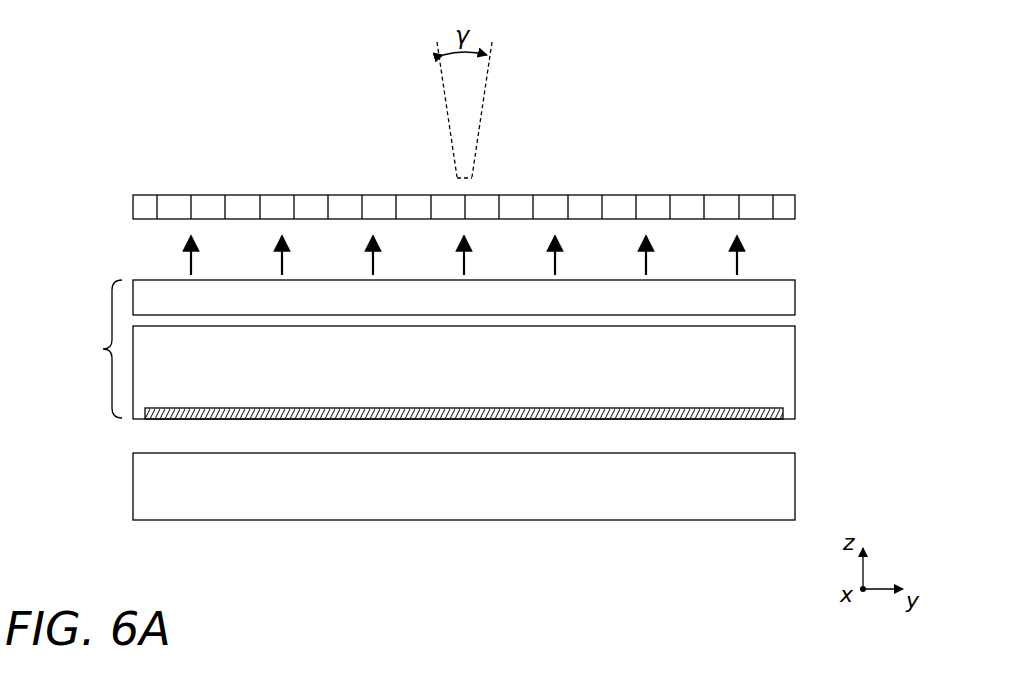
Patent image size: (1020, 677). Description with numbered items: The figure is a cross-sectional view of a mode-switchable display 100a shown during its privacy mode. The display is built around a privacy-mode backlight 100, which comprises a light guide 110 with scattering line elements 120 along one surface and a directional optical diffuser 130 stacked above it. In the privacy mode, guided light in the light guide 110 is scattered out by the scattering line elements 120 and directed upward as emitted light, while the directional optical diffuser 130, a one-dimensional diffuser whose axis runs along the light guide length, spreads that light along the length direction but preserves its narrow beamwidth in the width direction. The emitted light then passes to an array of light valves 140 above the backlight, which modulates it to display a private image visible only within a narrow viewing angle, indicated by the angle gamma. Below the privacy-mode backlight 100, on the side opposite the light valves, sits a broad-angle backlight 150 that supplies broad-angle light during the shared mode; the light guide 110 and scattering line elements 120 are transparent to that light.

The privacy-mode backlight 100 is at (81, 349).
The mode-switchable display 100a is at (775, 118).
The light guide 110 is at (797, 370).
The scattering line elements 120 is at (489, 404).
The directional optical diffuser 130 is at (797, 297).
The array of light valves 140 is at (797, 204).
The broad-angle backlight 150 is at (797, 484).